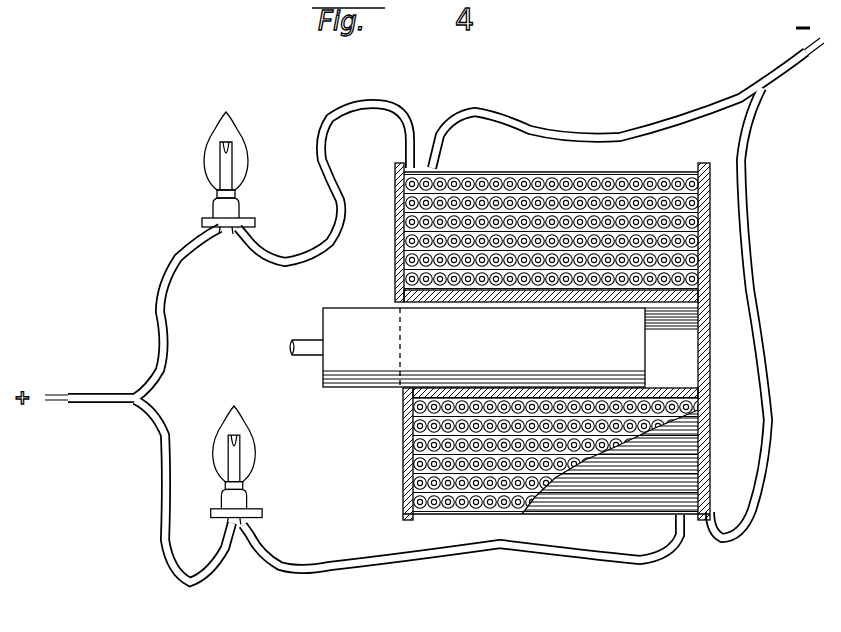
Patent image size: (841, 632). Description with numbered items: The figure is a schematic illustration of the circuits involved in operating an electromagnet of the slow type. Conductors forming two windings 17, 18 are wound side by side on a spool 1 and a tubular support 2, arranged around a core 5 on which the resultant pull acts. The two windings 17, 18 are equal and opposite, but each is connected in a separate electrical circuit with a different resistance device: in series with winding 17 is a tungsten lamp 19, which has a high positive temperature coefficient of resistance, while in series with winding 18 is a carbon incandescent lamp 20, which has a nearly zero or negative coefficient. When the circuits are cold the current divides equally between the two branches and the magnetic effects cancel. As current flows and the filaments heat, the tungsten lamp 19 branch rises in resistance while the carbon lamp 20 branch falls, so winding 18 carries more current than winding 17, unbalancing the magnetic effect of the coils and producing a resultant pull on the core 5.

The spool 1 is at (710, 265).
The tubular support 2 is at (690, 387).
The core 5 is at (494, 347).
The winding 17 is at (405, 120).
The winding 18 is at (460, 113).
The tungsten lamp 19 is at (200, 216).
The carbon incandescent lamp 20 is at (262, 497).